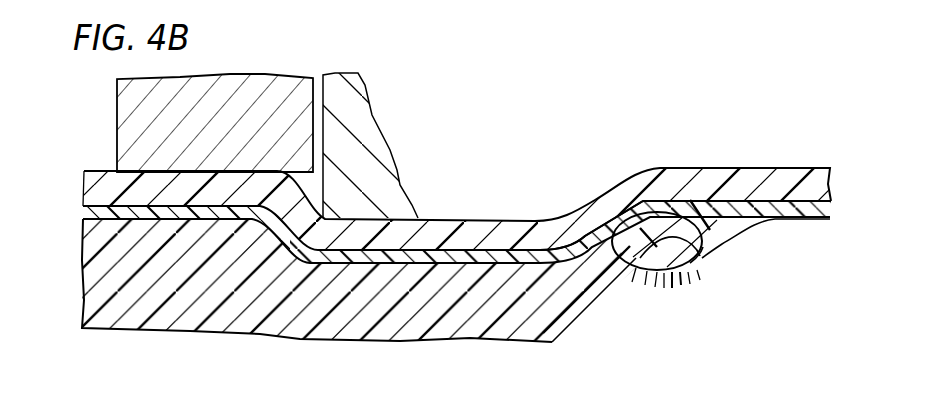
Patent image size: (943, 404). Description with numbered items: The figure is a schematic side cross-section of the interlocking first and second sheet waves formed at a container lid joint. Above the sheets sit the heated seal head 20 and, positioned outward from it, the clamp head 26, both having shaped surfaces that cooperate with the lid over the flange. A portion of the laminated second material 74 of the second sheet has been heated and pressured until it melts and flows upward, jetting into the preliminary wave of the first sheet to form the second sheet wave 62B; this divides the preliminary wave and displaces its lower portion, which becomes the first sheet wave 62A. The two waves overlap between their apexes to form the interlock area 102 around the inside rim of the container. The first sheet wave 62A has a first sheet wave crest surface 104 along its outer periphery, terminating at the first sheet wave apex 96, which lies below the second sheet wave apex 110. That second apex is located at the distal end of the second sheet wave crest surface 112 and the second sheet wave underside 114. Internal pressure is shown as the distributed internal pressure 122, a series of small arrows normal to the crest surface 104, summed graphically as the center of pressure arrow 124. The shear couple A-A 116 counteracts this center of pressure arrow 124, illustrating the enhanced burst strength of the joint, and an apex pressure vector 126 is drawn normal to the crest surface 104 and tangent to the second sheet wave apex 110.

The heated seal head 20 is at (346, 80).
The clamp head 26 is at (117, 108).
The first sheet wave 62A is at (762, 228).
The second sheet wave 62B is at (632, 192).
The second material 74 is at (523, 247).
The first sheet wave apex 96 is at (635, 270).
The interlock area 102 is at (702, 198).
The first sheet wave crest surface 104 is at (702, 250).
The second sheet wave apex 110 is at (741, 169).
The second sheet wave crest surface 112 is at (667, 167).
The second sheet wave underside 114 is at (594, 304).
The shear couple A-A 116 is at (587, 236).
The distributed internal pressure 122 is at (660, 277).
The center of pressure arrow 124 is at (672, 276).
The apex pressure vector 126 is at (700, 272).